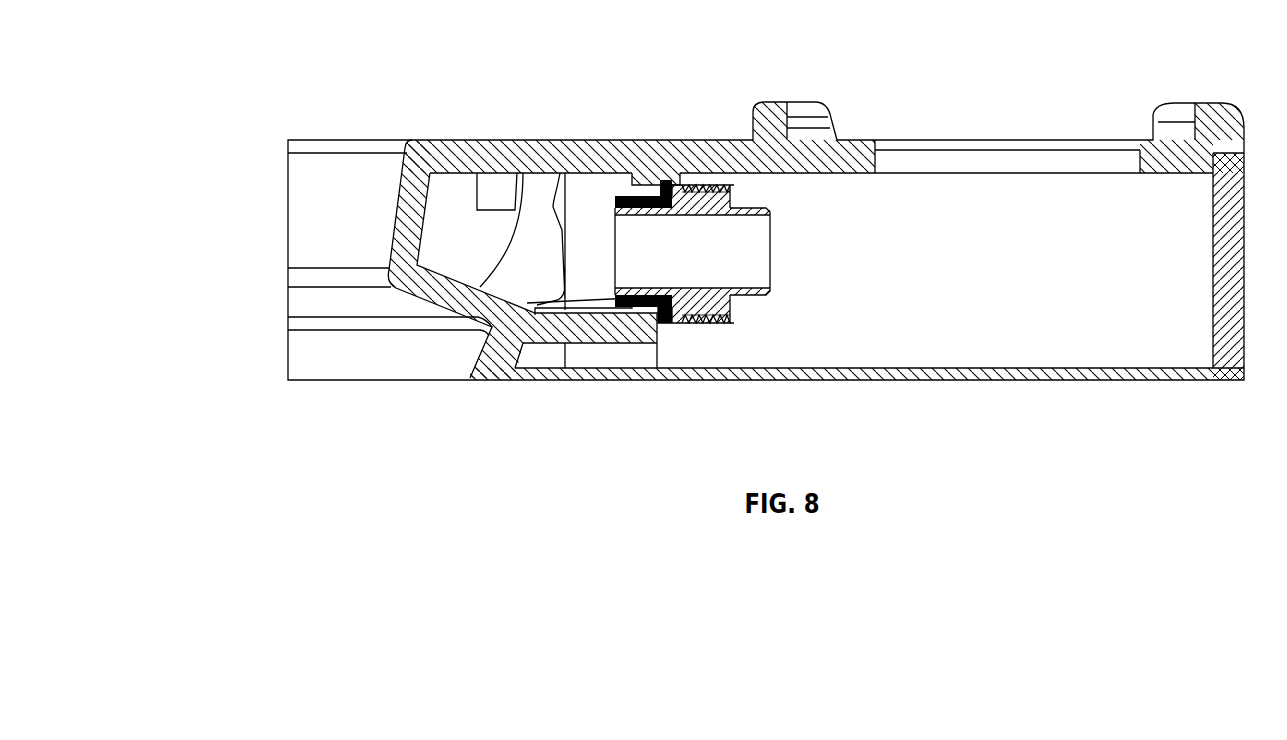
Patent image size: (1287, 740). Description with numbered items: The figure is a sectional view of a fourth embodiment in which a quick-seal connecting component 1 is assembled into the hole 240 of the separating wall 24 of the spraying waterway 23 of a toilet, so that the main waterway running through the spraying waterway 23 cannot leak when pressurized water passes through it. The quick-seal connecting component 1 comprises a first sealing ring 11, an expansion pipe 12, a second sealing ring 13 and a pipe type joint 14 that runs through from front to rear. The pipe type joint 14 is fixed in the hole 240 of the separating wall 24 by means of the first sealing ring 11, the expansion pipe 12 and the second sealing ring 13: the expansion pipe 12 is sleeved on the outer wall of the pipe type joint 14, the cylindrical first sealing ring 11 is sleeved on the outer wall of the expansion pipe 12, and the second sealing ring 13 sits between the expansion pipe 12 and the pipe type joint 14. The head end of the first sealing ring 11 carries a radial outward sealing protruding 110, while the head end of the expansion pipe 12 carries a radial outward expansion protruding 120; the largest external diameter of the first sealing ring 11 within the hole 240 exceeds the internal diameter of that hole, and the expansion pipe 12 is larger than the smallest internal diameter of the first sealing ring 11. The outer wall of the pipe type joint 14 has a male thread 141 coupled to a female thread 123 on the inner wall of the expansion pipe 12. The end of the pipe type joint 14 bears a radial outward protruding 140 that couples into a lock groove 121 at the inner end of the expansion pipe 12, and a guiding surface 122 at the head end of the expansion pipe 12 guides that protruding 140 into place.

The quick-seal connecting component 1 is at (540, 254).
The first sealing ring 11 is at (660, 323).
The expansion pipe 12 is at (675, 323).
The second sealing ring 13 is at (688, 322).
The pipe type joint 14 is at (770, 290).
The spraying waterway 23 is at (467, 225).
The separating wall 24 is at (640, 172).
The sealing protruding 110 is at (673, 187).
The expansion protruding 120 is at (662, 182).
The lock groove 121 is at (615, 207).
The guiding surface 122 is at (667, 323).
The female thread 123 is at (717, 185).
The radial outward protruding 140 is at (612, 305).
The male thread 141 is at (735, 185).
The hole 240 is at (655, 245).